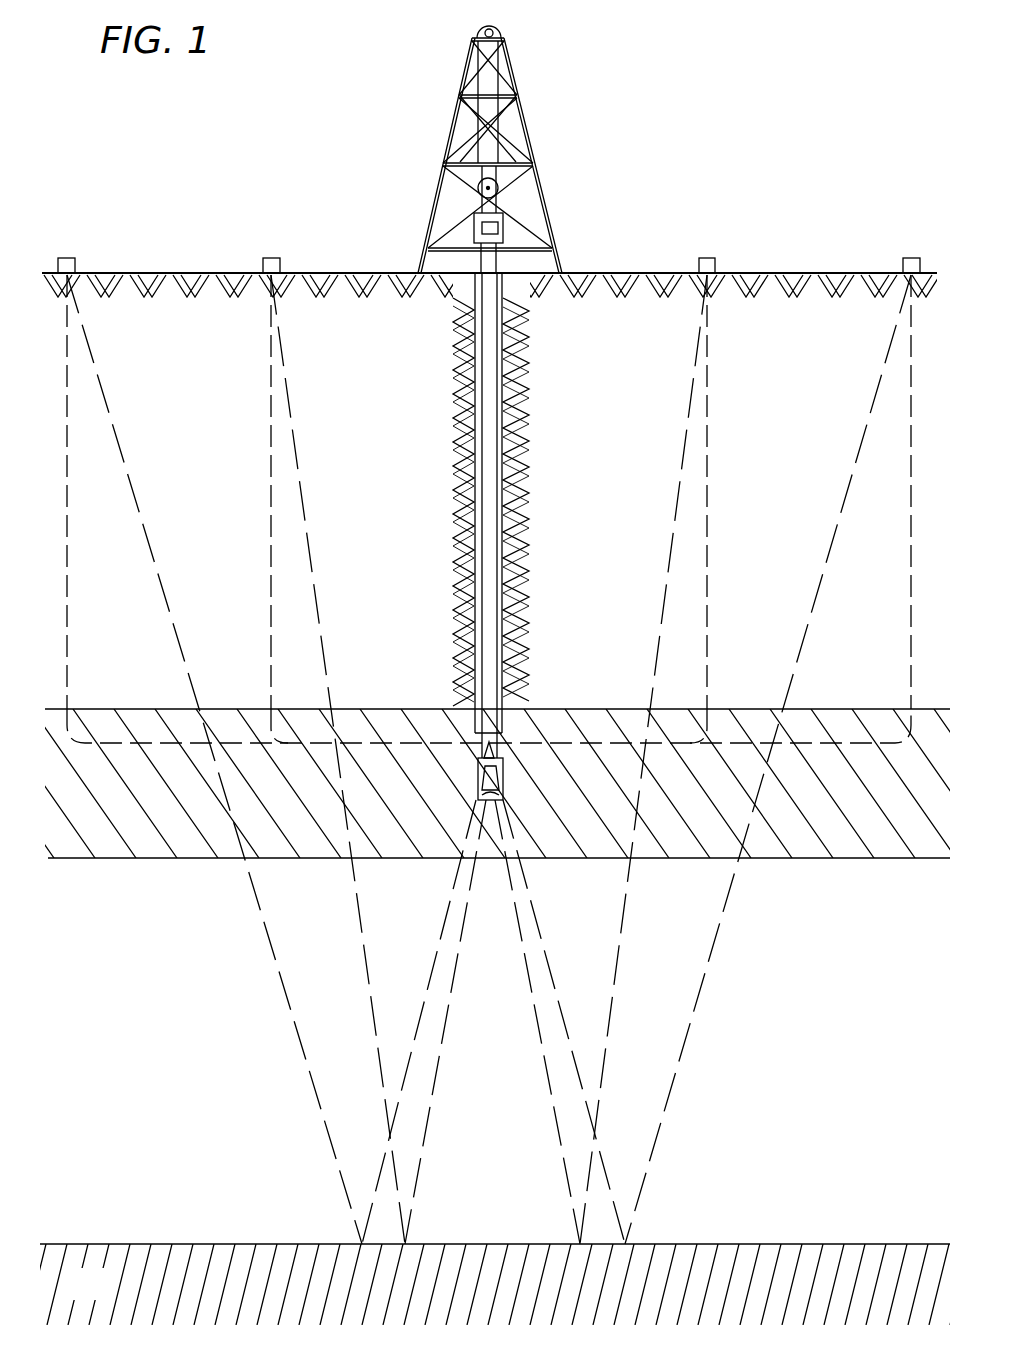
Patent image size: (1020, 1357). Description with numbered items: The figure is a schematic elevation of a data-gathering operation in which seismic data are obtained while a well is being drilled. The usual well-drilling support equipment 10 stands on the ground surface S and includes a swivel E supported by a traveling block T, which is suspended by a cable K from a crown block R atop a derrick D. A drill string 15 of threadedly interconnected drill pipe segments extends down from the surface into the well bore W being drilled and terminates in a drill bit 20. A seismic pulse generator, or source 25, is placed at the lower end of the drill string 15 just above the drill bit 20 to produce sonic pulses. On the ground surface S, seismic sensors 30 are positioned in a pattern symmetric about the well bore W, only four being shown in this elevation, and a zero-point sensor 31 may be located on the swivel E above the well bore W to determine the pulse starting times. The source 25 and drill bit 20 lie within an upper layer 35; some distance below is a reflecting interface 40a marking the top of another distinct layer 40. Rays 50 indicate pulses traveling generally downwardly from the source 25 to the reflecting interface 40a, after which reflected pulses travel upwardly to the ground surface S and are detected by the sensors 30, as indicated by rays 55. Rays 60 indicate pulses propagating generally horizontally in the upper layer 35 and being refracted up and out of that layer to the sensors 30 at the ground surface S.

The well-drilling support equipment 10 is at (583, 126).
The crown block R is at (500, 28).
The derrick D is at (462, 93).
The cable K is at (500, 126).
The traveling block T is at (480, 193).
The swivel E is at (505, 222).
The zero-point sensor 31 is at (505, 233).
The ground surface S is at (396, 272).
The seismic sensors 30 is at (66, 257).
The drill string 15 is at (487, 357).
The well bore W is at (500, 328).
The drill bit 20 is at (505, 772).
The seismic pulse generator (source) 25 is at (498, 743).
The layer 35 is at (95, 802).
The rays 60 is at (68, 628).
The rays 55 is at (375, 1028).
The rays 50 is at (538, 1027).
The layer 40 is at (100, 1293).
The reflecting interface 40a is at (122, 1244).